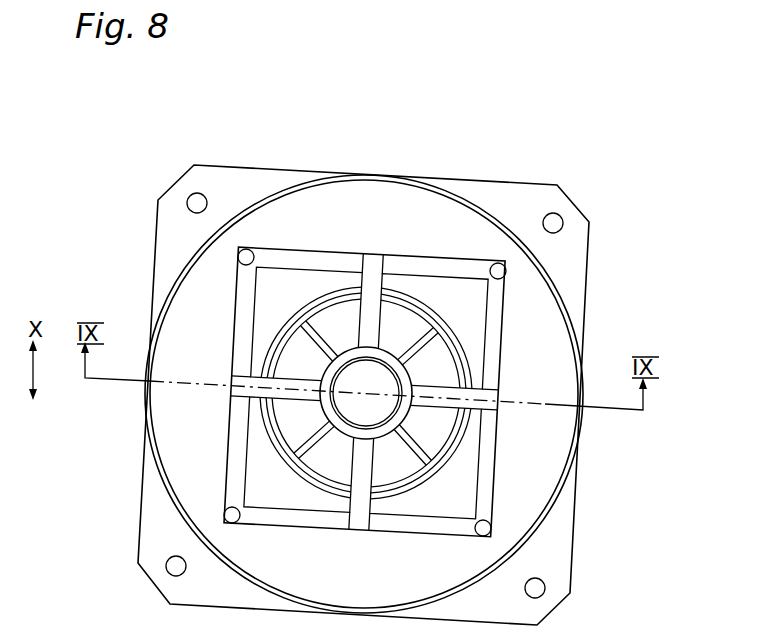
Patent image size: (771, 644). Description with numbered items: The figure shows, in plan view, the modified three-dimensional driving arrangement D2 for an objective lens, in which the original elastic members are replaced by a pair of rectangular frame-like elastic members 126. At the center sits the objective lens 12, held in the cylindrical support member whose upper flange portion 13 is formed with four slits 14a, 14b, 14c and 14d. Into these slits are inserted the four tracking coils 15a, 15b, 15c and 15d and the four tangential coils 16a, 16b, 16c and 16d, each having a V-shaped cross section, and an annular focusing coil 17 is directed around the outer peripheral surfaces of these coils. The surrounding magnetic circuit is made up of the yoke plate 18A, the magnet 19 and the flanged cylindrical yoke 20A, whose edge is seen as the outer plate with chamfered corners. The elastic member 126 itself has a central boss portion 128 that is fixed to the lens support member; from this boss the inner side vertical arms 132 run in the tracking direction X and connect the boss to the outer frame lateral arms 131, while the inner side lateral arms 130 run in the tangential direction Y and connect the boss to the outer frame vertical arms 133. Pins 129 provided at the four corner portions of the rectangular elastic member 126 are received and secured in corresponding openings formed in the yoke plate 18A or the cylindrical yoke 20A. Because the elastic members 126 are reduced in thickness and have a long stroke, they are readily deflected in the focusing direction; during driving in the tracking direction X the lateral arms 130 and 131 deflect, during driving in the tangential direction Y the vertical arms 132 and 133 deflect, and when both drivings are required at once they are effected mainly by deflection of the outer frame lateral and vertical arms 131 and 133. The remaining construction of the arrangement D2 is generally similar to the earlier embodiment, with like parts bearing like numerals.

The objective lens 12 is at (382, 408).
The flange portion 13 is at (562, 366).
The slit 14a is at (330, 345).
The slit 14b is at (301, 468).
The slit 14c is at (413, 480).
The slit 14d is at (440, 306).
The tracking coil 15a is at (284, 350).
The tracking coil 15b is at (283, 440).
The tracking coil 15c is at (445, 438).
The tracking coil 15d is at (472, 341).
The tangential coil 16a is at (415, 303).
The tangential coil 16b is at (353, 368).
The tangential coil 16c is at (325, 470).
The tangential coil 16d is at (383, 483).
The focusing coil 17 is at (302, 313).
The yoke plate 18A is at (350, 188).
The magnet 19 is at (287, 190).
The cylindrical yoke 20A is at (223, 180).
The elastic member 126 is at (512, 255).
The central boss portion 128 is at (465, 325).
The pin 129 is at (238, 254).
The inner side lateral arm 130 is at (458, 392).
The outer frame lateral arm 131 is at (387, 268).
The inner side vertical arm 132 is at (331, 556).
The outer frame vertical arm 133 is at (248, 368).
The modified driving arrangement D2 is at (594, 136).